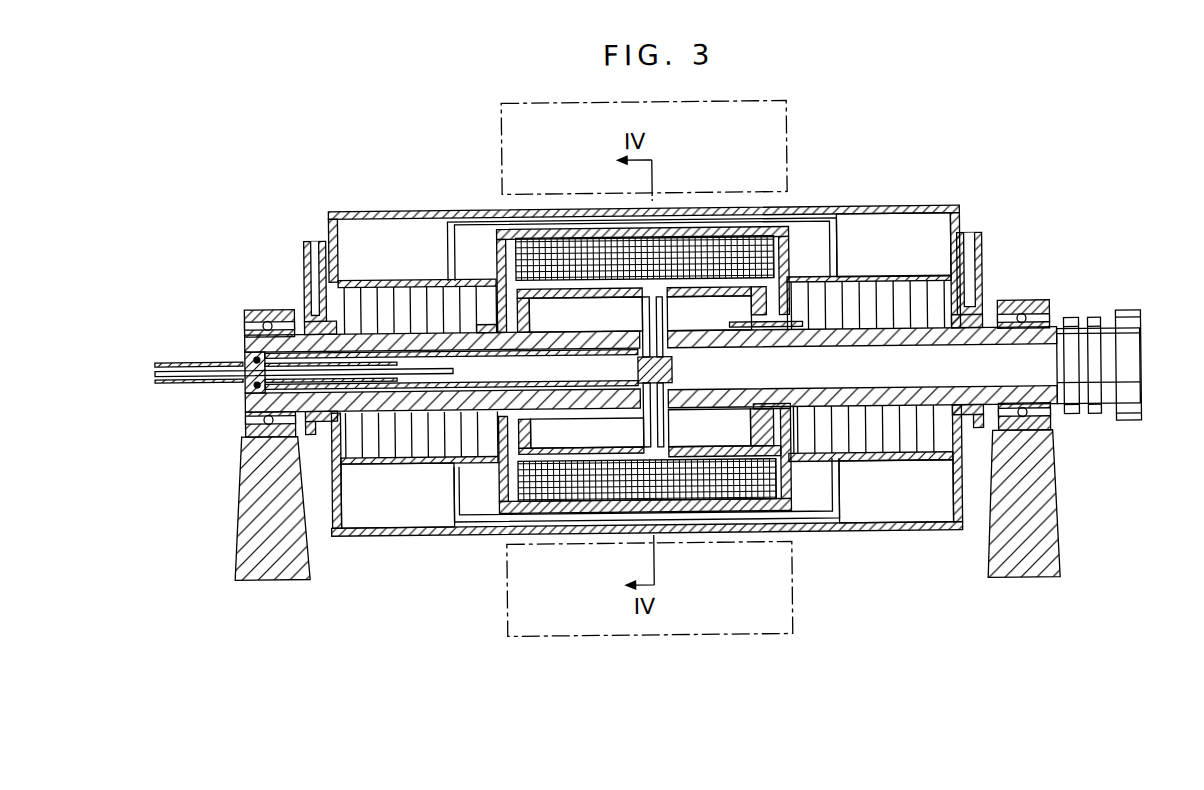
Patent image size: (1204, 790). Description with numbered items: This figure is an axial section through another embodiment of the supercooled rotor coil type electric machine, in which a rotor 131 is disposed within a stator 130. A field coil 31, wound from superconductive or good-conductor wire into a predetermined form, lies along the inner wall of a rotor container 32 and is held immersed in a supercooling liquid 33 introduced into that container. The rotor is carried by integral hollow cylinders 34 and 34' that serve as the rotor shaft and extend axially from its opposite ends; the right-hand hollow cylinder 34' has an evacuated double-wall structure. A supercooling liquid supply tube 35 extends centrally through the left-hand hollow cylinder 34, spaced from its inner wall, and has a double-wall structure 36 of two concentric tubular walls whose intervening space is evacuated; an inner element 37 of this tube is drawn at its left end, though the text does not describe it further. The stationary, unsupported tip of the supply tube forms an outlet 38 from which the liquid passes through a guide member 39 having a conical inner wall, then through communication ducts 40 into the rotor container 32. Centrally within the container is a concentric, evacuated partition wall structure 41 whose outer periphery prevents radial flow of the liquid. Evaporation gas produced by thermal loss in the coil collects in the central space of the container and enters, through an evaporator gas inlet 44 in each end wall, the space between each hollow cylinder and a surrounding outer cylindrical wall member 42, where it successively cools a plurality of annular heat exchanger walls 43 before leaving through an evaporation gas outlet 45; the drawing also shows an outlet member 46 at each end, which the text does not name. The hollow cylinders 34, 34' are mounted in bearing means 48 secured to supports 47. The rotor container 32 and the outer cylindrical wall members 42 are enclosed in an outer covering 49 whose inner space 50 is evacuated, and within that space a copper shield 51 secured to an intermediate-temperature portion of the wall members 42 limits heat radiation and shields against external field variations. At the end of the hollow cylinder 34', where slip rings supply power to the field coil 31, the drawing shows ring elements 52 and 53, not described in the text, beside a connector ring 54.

The field coil 31 is at (560, 495).
The rotor container 32 is at (695, 508).
The supercooling liquid 33 is at (773, 497).
The hollow cylinder 34 is at (443, 421).
The hollow cylinder 34' is at (904, 367).
The supercooling liquid supply tube 35 is at (247, 380).
The double-wall structure 36 is at (190, 378).
The rod 37 is at (206, 360).
The outlet 38 is at (447, 378).
The guide member 39 is at (478, 386).
The communication ducts 40 is at (655, 432).
The partition wall structure 41 is at (597, 447).
The outer cylindrical wall member 42 is at (363, 465).
The annular heat exchanger walls 43 is at (408, 297).
The evaporator gas inlet 44 is at (507, 315).
The evaporation gas outlet 45 is at (337, 314).
The bracket 46 is at (305, 276).
The supports 47 is at (239, 518).
The bearing means 48 is at (262, 305).
The outer covering 49 is at (757, 211).
The inner space 50 is at (888, 255).
The shield 51 is at (683, 215).
The bearing 52 is at (1070, 322).
The bearing 53 is at (1095, 322).
The connector ring 54 is at (1142, 332).
The stator 130 is at (789, 128).
The rotor 131 is at (818, 207).